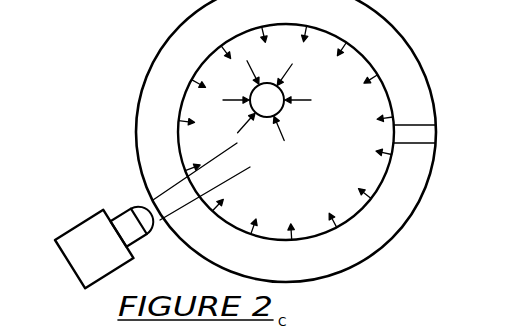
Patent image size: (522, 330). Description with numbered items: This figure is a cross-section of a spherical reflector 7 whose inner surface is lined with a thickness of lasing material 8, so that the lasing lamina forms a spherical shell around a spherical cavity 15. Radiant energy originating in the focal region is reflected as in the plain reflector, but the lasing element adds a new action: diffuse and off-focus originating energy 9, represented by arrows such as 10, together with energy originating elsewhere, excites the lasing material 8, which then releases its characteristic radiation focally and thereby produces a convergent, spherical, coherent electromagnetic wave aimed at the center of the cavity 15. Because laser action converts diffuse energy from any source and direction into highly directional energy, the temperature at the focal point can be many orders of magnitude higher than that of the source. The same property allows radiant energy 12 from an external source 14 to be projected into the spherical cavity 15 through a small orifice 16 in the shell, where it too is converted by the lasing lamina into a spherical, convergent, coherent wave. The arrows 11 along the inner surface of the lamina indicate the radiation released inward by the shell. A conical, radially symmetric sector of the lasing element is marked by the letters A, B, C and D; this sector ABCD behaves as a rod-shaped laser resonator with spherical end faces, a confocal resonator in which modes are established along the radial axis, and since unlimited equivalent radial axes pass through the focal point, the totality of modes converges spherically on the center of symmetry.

The reflector 7 is at (403, 30).
The lasing material 8 is at (407, 65).
The off-focus originating energy 9 is at (273, 97).
The arrows 10 is at (281, 119).
The radiation arrows at inner tube 11 is at (297, 226).
The radiant energy 12 is at (155, 213).
The external source 14 is at (88, 232).
The spherical cavity 15 is at (305, 161).
The small orifice 16 is at (182, 204).
The sector corner A is at (406, 146).
The sector corner B is at (406, 126).
The sector corner C is at (445, 126).
The sector corner D is at (445, 151).